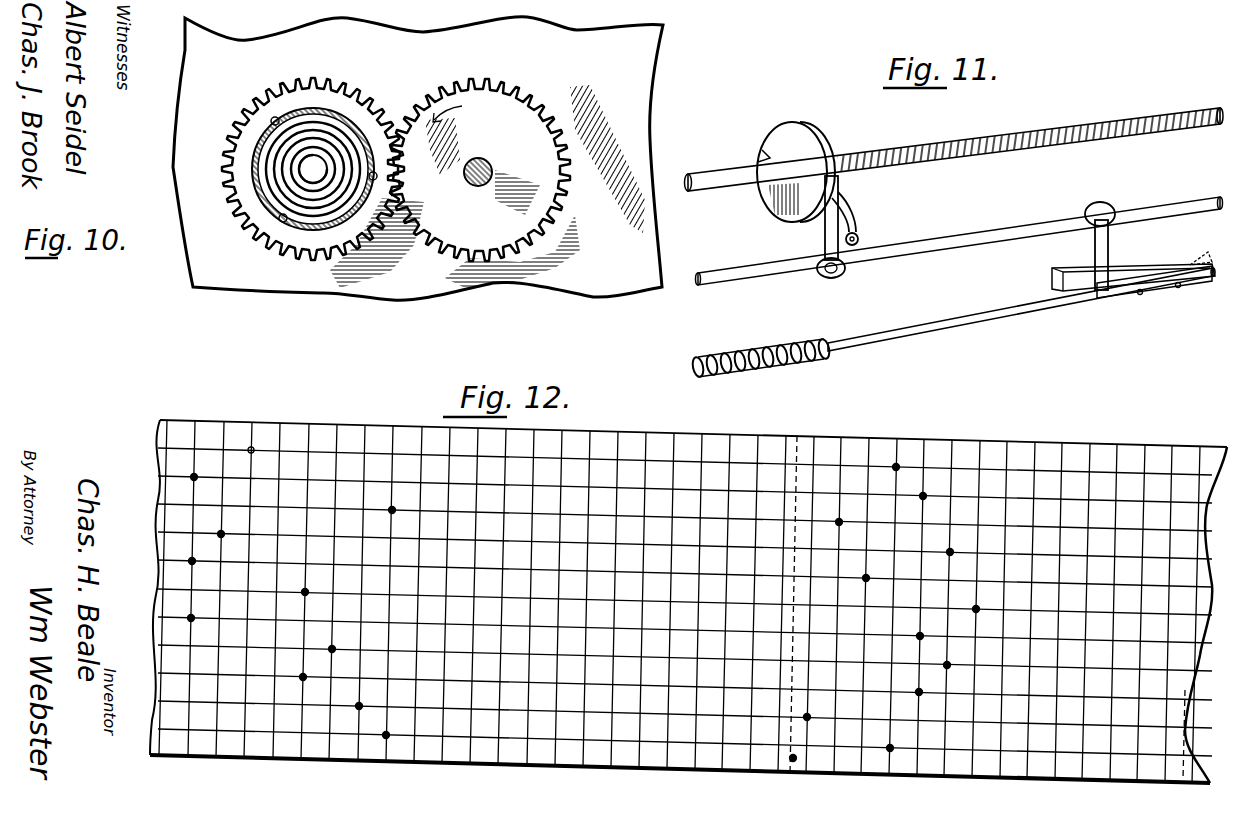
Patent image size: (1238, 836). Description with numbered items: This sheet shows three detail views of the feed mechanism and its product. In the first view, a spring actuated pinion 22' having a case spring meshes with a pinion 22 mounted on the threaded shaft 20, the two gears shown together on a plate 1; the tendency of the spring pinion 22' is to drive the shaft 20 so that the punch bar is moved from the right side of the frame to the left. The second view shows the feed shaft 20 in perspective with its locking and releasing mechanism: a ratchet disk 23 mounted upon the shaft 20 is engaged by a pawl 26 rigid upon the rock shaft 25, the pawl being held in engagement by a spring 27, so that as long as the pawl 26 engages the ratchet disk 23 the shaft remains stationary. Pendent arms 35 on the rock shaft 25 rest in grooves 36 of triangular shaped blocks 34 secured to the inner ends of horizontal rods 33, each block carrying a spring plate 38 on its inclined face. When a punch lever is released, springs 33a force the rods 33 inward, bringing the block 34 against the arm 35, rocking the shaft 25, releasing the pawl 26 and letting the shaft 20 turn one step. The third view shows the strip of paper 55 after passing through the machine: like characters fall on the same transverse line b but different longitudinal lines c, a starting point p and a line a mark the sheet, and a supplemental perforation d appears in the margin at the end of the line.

In FIG. 10, the plate 1 is at (418, 158).
In FIG. 10, the spring actuated pinion 22' is at (323, 175).
In FIG. 10, the pinion 22 is at (503, 183).
In FIG. 10, the threaded shaft 20 is at (487, 162).
In FIG. 11, the threaded shaft 20 is at (933, 158).
In FIG. 11, the ratchet disk 23 is at (780, 210).
In FIG. 11, the rock shaft 25 is at (930, 250).
In FIG. 11, the pawl 26 is at (826, 238).
In FIG. 11, the spring 27 is at (858, 220).
In FIG. 11, the horizontal rod 33 is at (970, 318).
In FIG. 11, the spring 33a is at (795, 358).
In FIG. 11, the triangular shaped block 34 is at (1053, 278).
In FIG. 11, the pendent arm 35 is at (1108, 248).
In FIG. 11, the groove 36 is at (1090, 290).
In FIG. 11, the spring plate 38 is at (1190, 262).
In FIG. 12, the strip of paper 55 is at (1065, 442).
In FIG. 12, the dashed reference line a is at (792, 470).
In FIG. 12, the transverse line b is at (197, 465).
In FIG. 12, the longitudinal line c is at (373, 452).
In FIG. 12, the supplemental perforation d is at (793, 762).
In FIG. 12, the start point p is at (254, 447).